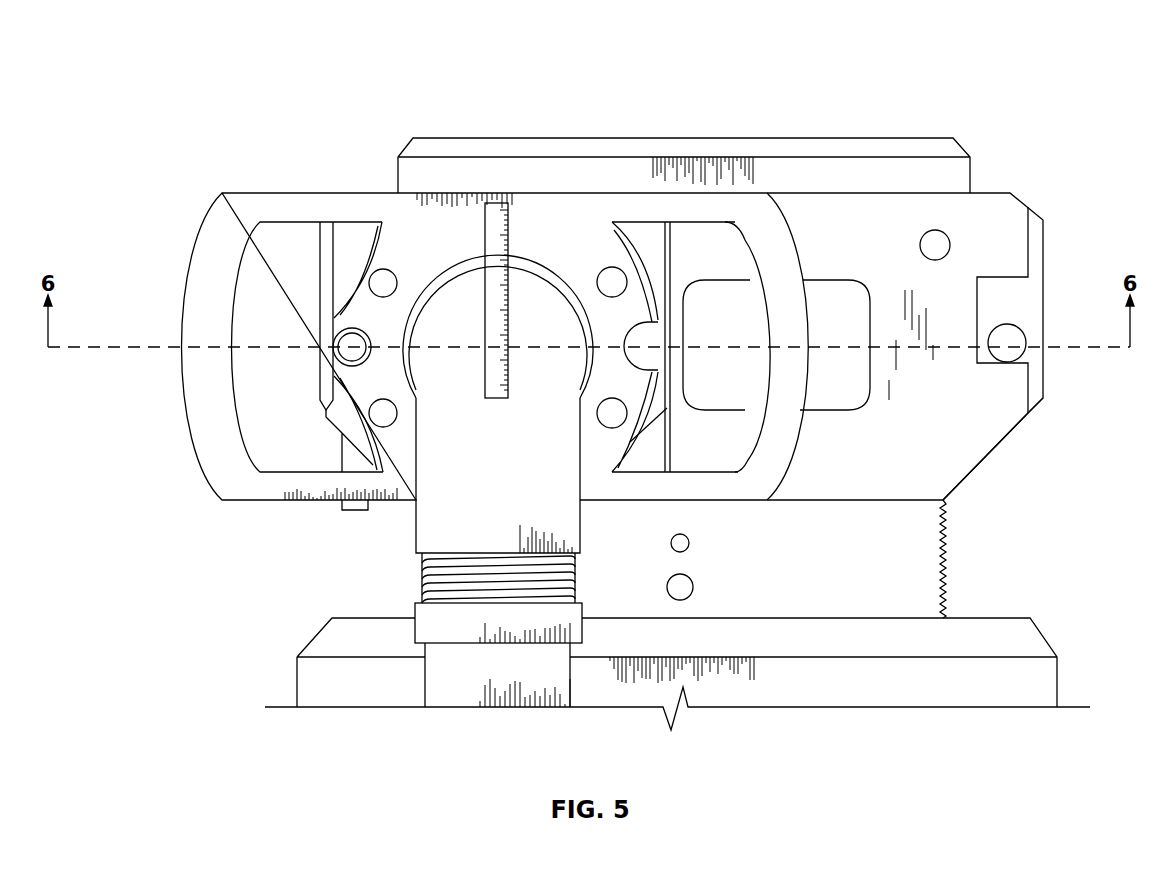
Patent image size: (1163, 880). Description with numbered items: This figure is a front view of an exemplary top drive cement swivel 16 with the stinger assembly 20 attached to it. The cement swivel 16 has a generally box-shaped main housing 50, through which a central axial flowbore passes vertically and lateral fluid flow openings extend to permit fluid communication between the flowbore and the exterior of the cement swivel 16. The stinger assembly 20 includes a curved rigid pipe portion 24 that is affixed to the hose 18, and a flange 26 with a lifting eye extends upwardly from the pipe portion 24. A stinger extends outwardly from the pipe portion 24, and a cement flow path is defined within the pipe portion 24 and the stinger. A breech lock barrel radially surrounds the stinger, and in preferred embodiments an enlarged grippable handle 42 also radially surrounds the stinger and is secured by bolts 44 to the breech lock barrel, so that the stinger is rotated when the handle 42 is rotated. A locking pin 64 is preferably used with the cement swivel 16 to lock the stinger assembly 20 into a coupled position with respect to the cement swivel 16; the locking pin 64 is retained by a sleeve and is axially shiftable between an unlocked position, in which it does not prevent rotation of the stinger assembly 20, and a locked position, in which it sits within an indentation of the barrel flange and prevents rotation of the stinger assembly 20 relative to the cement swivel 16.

The top drive cement swivel 16 is at (976, 183).
The hose 18 is at (440, 690).
The stinger assembly 20 is at (251, 72).
The curved rigid pipe portion 24 is at (433, 523).
The flange 26 is at (485, 243).
The grippable handle 42 is at (212, 407).
The bolts 44 is at (380, 285).
The main housing 50 is at (993, 428).
The locking pin 64 is at (352, 347).